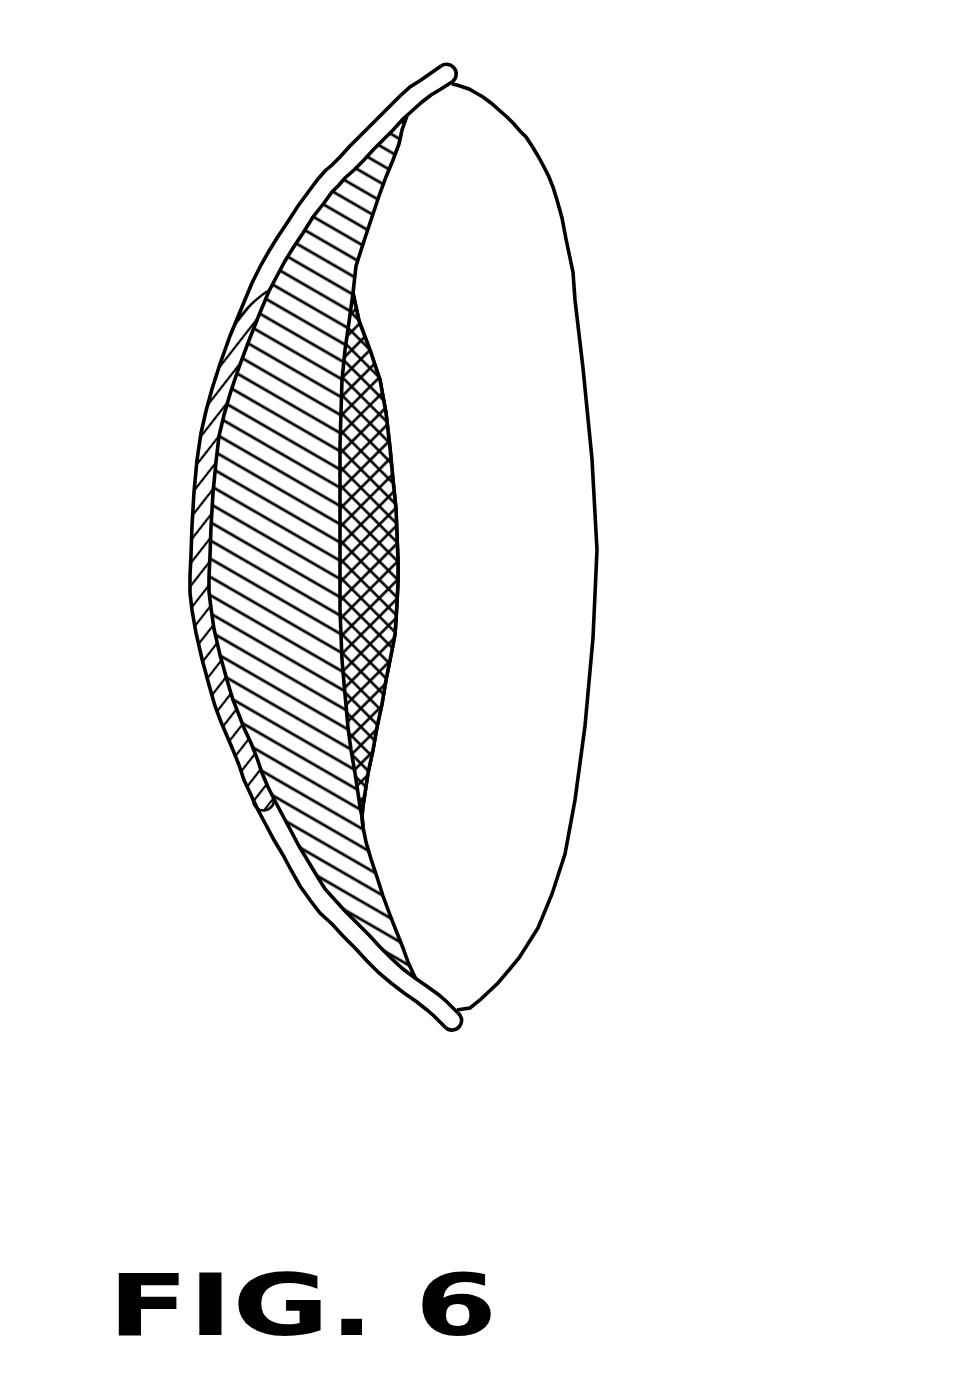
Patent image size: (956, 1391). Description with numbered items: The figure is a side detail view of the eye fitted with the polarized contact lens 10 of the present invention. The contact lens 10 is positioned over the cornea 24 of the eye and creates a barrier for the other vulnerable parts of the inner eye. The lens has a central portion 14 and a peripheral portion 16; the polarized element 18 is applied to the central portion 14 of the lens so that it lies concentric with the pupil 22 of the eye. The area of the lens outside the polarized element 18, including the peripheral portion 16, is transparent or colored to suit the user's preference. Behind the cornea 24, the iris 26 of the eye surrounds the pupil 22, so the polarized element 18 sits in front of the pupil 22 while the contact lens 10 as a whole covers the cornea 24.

The polarized contact lens 10 is at (306, 176).
The central portion 14 is at (193, 617).
The peripheral portion 16 is at (397, 997).
The polarized element 18 is at (205, 449).
The pupil 22 is at (357, 403).
The cornea 24 is at (277, 557).
The iris 26 is at (543, 823).